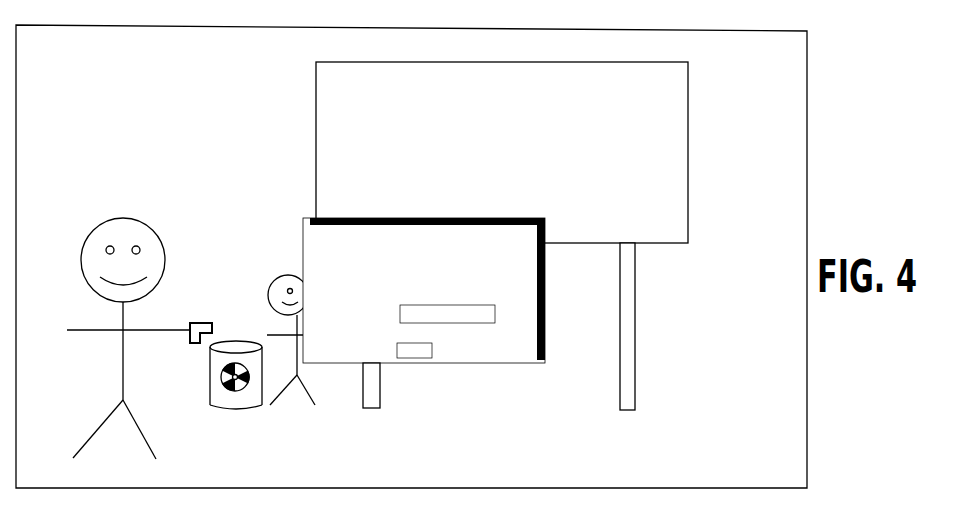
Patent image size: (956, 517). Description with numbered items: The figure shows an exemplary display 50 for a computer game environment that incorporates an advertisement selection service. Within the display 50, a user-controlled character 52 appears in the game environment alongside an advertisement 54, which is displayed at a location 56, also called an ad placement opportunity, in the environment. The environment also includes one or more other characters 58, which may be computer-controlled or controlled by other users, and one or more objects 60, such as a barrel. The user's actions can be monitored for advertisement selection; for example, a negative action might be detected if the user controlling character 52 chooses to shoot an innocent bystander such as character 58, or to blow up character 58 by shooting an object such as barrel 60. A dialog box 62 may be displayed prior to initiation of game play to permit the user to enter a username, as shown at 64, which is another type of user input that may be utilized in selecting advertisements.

The display 50 is at (808, 54).
The user-controlled character 52 is at (92, 438).
The advertisement 54 is at (315, 85).
The location 56 is at (622, 358).
The other character 58 is at (278, 300).
The object 60 is at (207, 397).
The dialog box 62 is at (523, 343).
The username input 64 is at (507, 320).